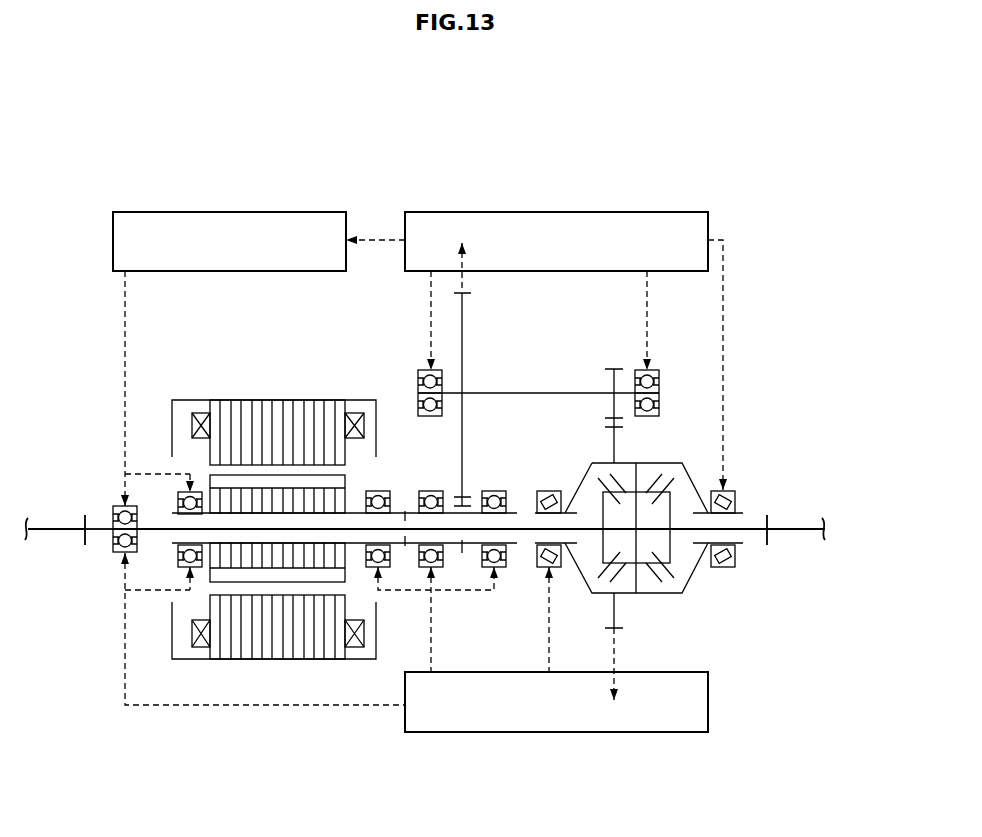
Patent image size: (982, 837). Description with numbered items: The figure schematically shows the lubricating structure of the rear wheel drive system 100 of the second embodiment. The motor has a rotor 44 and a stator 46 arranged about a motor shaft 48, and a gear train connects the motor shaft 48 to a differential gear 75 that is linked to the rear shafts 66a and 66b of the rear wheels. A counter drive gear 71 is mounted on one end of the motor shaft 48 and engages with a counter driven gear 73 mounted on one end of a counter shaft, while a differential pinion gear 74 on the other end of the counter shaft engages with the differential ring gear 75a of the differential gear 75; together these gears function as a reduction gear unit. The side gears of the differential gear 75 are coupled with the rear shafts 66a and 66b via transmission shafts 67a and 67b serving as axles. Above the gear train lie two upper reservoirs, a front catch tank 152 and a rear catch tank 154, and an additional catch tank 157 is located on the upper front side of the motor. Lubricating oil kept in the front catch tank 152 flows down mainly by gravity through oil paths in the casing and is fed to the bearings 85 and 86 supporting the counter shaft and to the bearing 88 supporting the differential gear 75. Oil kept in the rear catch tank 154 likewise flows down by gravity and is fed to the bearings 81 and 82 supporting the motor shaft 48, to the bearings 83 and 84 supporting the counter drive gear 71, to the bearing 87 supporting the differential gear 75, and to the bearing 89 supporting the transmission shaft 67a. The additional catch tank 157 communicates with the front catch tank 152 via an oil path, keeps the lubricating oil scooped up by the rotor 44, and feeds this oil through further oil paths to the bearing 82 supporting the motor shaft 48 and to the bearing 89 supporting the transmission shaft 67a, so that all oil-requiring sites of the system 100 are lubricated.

The rear wheel drive system 100 is at (767, 270).
The rotor 44 is at (210, 482).
The stator 46 is at (210, 603).
The motor shaft 48 is at (503, 393).
The rear shaft 66a is at (55, 533).
The rear shaft 66b is at (797, 529).
The transmission shaft 67a is at (100, 533).
The transmission shaft 67b is at (752, 527).
The counter drive gear 71 is at (462, 557).
The counter driven gear 73 is at (462, 323).
The differential pinion gear 74 is at (606, 382).
The differential gear 75 is at (657, 597).
The differential ring gear 75a is at (616, 447).
The bearing 81 is at (393, 553).
The bearing 82 is at (178, 556).
The bearing 83 is at (431, 490).
The bearing 84 is at (508, 553).
The bearing 85 is at (418, 385).
The bearing 86 is at (648, 368).
The bearing 87 is at (565, 490).
The bearing 88 is at (735, 555).
The bearing 89 is at (113, 508).
The front catch tank 152 is at (488, 212).
The rear catch tank 154 is at (488, 732).
The additional catch tank 157 is at (145, 212).